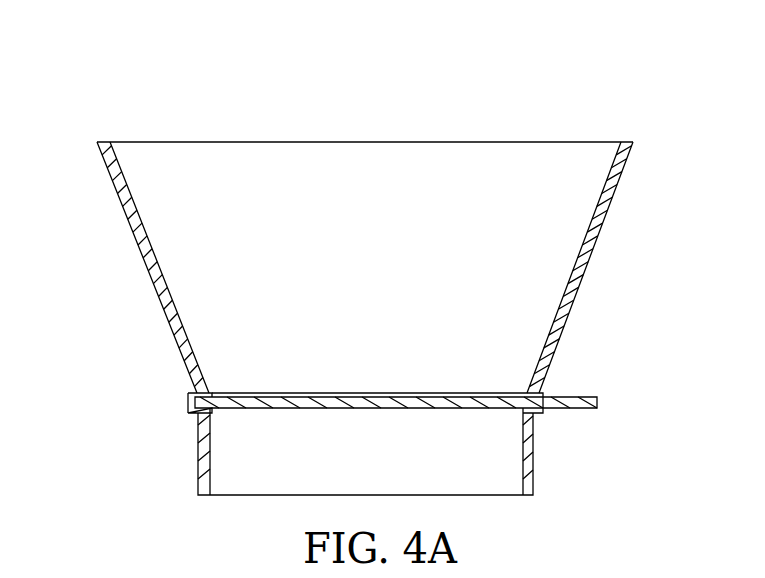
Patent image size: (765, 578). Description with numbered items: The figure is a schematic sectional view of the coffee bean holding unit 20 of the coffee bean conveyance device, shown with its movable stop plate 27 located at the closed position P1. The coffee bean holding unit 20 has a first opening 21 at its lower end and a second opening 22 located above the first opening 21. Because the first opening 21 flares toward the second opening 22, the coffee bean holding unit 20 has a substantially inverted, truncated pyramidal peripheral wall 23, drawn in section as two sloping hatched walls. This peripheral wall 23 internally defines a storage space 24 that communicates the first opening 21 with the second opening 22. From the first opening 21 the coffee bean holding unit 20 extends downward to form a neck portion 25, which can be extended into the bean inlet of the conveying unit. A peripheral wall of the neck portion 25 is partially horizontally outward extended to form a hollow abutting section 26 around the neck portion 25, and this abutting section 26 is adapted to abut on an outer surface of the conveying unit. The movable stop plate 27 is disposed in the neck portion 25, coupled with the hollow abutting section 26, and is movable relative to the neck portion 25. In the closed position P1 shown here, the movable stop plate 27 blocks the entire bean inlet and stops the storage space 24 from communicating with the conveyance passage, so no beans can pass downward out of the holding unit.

The coffee bean holding unit 20 is at (374, 47).
The first opening 21 is at (463, 393).
The second opening 22 is at (510, 142).
The peripheral wall 23 is at (592, 237).
The storage space 24 is at (170, 212).
The neck portion 25 is at (528, 462).
The hollow abutting section 26 is at (192, 402).
The movable stop plate 27 is at (590, 400).
The closed position P1 is at (265, 383).